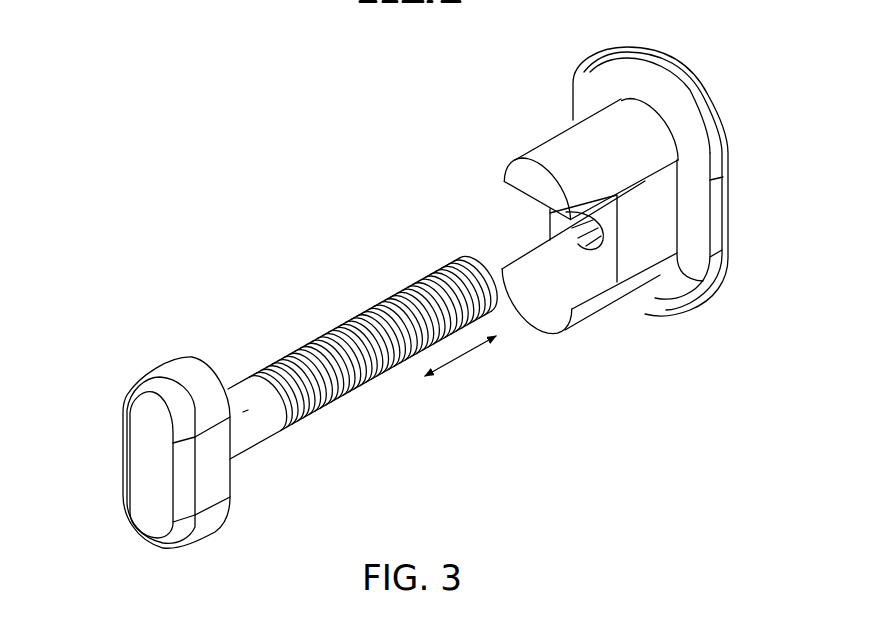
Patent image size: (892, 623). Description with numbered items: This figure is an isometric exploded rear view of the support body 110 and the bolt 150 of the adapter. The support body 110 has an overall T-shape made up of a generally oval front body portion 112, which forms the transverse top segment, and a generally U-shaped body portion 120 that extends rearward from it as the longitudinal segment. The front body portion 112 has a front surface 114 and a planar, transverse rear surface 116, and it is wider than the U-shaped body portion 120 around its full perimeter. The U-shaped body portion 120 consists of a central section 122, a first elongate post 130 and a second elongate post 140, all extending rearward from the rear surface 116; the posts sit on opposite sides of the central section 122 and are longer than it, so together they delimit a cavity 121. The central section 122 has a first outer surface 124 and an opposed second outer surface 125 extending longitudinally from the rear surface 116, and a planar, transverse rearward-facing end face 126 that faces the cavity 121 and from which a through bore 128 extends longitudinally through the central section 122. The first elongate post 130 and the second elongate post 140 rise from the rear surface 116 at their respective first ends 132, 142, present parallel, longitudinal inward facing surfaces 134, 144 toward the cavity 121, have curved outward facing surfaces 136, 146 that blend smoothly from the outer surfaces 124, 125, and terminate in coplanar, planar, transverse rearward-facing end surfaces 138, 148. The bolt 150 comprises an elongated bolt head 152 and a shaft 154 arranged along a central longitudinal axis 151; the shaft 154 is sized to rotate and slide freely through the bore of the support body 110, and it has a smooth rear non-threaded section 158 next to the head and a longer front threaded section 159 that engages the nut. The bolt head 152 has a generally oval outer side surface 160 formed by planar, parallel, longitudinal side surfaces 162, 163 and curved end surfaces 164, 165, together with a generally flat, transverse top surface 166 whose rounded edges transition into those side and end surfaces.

The support body 110 is at (592, 221).
The front body portion 112 is at (693, 171).
The front surface 114 is at (723, 133).
The rear surface 116 is at (632, 78).
The U-shaped body portion 120 is at (565, 159).
The cavity 121 is at (592, 285).
The central section 122 is at (642, 240).
The first outer surface 124 is at (653, 220).
The second outer surface 125 is at (583, 227).
The rearward-facing end face 126 is at (680, 298).
The through bore 128 is at (596, 268).
The first elongate post 130 is at (500, 123).
The first end 132 is at (653, 110).
The inward facing surface 134 is at (548, 216).
The outward facing surface 136 is at (605, 133).
The rearward-facing end surface 138 is at (511, 184).
The second elongate post 140 is at (615, 306).
The first end 142 is at (716, 263).
The inward facing surface 144 is at (572, 311).
The outward facing surface 146 is at (583, 317).
The rearward-facing end surface 148 is at (523, 308).
The bolt 150 is at (262, 416).
The central longitudinal axis 151 is at (330, 356).
The bolt head 152 is at (176, 448).
The shaft 154 is at (374, 342).
The non-threaded section 158 is at (228, 386).
The threaded section 159 is at (405, 284).
The outer side surface 160 is at (216, 493).
The side surface 162 is at (218, 468).
The side surface 163 is at (122, 437).
The end surface 164 is at (175, 373).
The end surface 165 is at (204, 540).
The top surface 166 is at (147, 470).